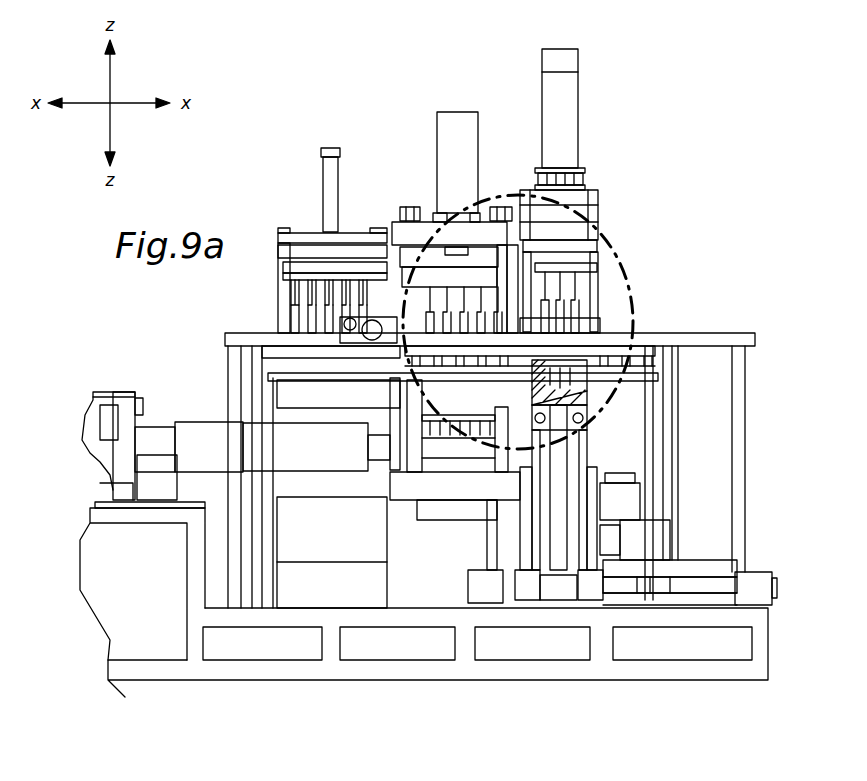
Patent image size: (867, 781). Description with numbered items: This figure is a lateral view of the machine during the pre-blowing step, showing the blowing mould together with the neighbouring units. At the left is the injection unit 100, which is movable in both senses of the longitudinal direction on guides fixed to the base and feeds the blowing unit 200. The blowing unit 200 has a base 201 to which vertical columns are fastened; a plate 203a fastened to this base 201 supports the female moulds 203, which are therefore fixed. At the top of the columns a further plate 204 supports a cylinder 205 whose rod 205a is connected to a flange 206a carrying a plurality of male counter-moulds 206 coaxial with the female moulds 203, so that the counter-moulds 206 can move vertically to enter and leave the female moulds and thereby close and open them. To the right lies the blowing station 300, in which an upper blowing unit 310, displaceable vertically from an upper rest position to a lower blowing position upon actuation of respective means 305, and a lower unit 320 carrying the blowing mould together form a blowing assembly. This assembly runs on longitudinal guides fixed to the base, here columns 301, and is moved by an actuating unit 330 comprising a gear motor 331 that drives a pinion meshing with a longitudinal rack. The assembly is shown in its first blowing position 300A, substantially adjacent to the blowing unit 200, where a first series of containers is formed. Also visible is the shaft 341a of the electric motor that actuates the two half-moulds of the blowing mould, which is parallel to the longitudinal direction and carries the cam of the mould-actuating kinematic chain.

The injection unit 100 is at (182, 392).
The blowing unit 200 is at (404, 197).
The base 201 is at (440, 482).
The female moulds 203 is at (500, 440).
The plate 203a is at (432, 445).
The further plate 204 is at (436, 235).
The cylinder 205 is at (450, 140).
The rod 205a is at (458, 237).
The male counter-moulds 206 is at (387, 230).
The flange 206a is at (566, 232).
The blowing station 300 is at (656, 191).
The first blowing position 300A is at (662, 185).
The columns 301 is at (620, 585).
The actuating means 305 is at (566, 120).
The upper blowing unit 310 is at (600, 290).
The lower unit 320 is at (622, 443).
The actuating unit 330 is at (717, 547).
The gear motor 331 is at (628, 497).
The shaft 341a is at (648, 545).